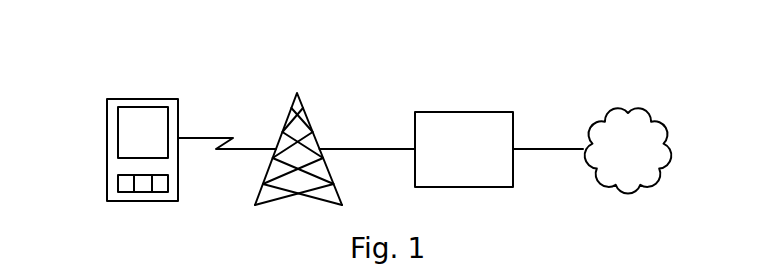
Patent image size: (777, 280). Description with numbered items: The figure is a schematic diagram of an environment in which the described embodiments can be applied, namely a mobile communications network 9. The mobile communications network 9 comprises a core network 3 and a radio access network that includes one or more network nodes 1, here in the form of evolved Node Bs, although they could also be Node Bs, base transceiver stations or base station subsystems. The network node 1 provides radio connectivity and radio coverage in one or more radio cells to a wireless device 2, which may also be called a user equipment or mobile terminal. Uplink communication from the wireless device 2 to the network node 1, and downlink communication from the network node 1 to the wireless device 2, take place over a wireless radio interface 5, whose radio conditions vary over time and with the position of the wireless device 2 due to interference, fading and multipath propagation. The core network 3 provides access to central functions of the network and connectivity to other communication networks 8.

The network node 1 is at (310, 125).
The wireless device 2 is at (130, 98).
The core network 3 is at (455, 146).
The wireless radio interface 5 is at (201, 137).
The other communication networks 8 is at (620, 164).
The mobile communications network 9 is at (602, 79).